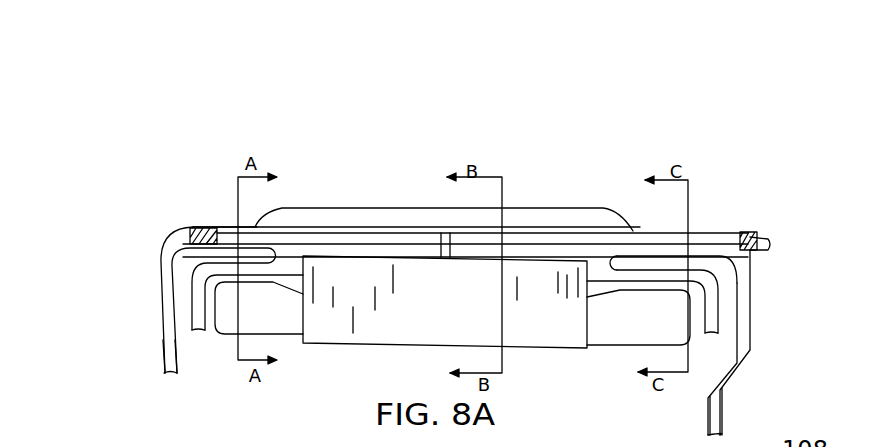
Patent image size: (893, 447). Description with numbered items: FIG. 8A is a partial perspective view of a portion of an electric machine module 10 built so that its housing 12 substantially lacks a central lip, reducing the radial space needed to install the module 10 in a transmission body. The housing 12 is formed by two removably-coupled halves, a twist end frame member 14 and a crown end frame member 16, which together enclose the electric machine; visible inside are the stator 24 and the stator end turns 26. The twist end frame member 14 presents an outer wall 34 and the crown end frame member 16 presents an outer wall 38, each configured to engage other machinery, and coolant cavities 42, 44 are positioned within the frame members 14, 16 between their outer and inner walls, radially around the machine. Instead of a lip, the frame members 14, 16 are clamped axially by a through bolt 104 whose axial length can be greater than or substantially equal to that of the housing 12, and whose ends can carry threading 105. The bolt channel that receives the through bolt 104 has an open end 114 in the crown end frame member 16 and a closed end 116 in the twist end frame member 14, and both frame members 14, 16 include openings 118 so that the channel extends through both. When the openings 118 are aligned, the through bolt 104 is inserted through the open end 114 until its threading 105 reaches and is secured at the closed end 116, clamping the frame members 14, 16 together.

The electric machine module 10 is at (578, 80).
The housing 12 is at (552, 200).
The twist end frame member 14 is at (163, 257).
The crown end frame member 16 is at (750, 276).
The stator 24 is at (362, 277).
The stator end turns 26 is at (228, 301).
The outer wall 34 is at (164, 355).
The outer wall 38 is at (752, 355).
The coolant cavity 42 is at (183, 318).
The coolant cavity 44 is at (727, 318).
The through bolt 104 is at (750, 243).
The threading 105 is at (190, 230).
The open end 114 is at (742, 233).
The closed end 116 is at (196, 222).
The openings 118 is at (442, 257).